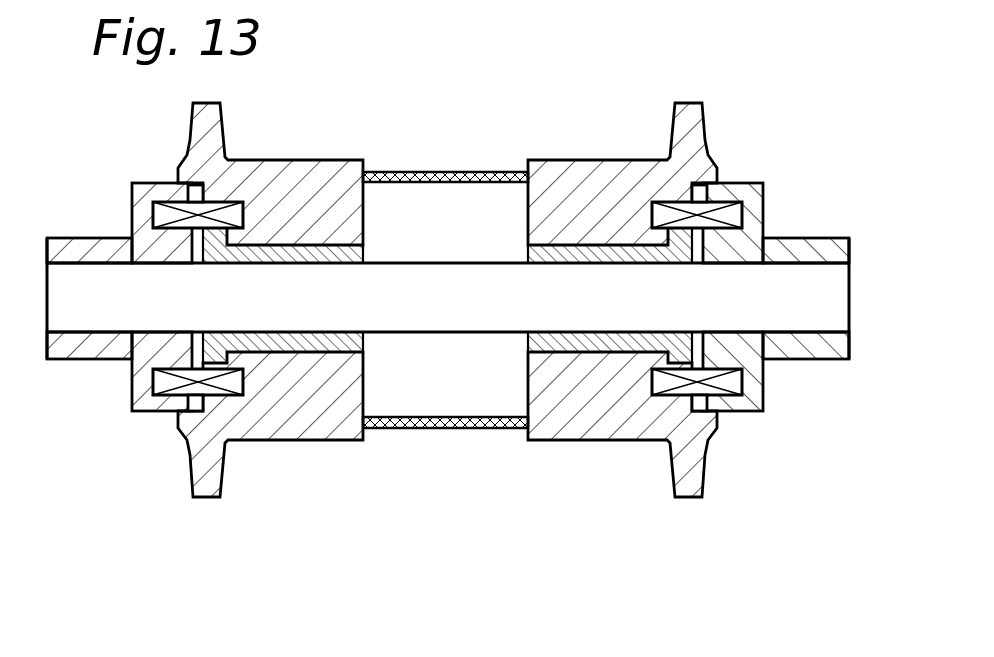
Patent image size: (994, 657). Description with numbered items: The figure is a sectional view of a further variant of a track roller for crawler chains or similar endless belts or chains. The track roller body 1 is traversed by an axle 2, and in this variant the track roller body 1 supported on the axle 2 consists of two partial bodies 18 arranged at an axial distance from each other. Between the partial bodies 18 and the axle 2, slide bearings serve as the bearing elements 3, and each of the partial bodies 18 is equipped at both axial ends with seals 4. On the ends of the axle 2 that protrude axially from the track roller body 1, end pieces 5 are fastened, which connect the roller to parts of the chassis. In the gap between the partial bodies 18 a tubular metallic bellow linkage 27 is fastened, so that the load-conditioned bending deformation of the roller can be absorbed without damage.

The track roller body 1 is at (137, 440).
The axle 2 is at (765, 292).
The bearings 3 is at (320, 257).
The seals 4 is at (175, 217).
The end pieces 5 is at (72, 250).
The partial bodies 18 is at (273, 190).
The center shell 27 is at (455, 170).